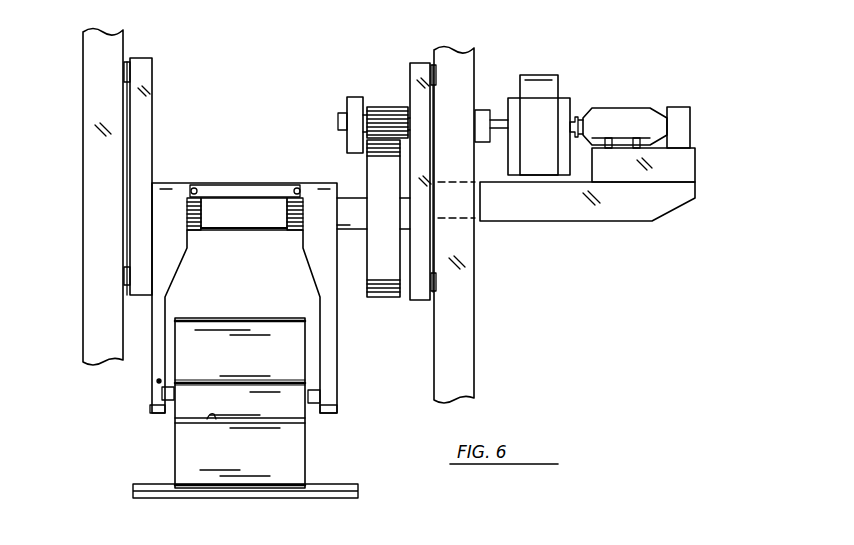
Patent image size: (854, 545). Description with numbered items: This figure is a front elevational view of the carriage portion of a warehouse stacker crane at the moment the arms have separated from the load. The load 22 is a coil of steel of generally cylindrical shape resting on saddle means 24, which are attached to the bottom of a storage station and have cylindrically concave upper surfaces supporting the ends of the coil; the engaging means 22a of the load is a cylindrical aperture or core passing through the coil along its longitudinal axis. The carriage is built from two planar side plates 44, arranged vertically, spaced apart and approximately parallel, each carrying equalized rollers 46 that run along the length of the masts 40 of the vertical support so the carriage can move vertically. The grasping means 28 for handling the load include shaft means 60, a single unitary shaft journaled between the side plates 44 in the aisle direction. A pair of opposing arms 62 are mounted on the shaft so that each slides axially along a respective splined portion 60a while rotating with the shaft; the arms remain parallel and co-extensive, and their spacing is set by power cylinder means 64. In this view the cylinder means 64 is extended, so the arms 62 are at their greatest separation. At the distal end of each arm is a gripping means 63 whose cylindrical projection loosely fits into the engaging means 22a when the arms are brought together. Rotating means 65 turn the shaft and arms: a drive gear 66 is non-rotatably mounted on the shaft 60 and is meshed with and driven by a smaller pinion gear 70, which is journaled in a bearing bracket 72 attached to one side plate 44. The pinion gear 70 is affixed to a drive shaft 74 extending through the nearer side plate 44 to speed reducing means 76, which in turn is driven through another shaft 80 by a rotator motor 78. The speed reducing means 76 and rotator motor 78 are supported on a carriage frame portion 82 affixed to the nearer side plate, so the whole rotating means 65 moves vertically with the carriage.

The load 22 is at (305, 462).
The engaging means 22a is at (212, 420).
The saddle means 24 is at (328, 486).
The grasping means 28 is at (336, 378).
The mast 40 is at (90, 318).
The side plate 44 is at (152, 62).
The equalized roller 46 is at (128, 62).
The shaft means 60 is at (248, 212).
The splined portion 60a is at (204, 232).
The arm 62 is at (165, 300).
The gripping means 63 is at (158, 381).
The power cylinder means 64 is at (226, 185).
The rotating means 65 is at (562, 72).
The drive gear 66 is at (383, 298).
The pinion gear 70 is at (378, 107).
The bearing bracket 72 is at (352, 97).
The drive shaft 74 is at (435, 140).
The speed reducing means 76 is at (528, 75).
The rotator motor 78 is at (632, 108).
The shaft 80 is at (576, 117).
The carriage frame portion 82 is at (625, 212).